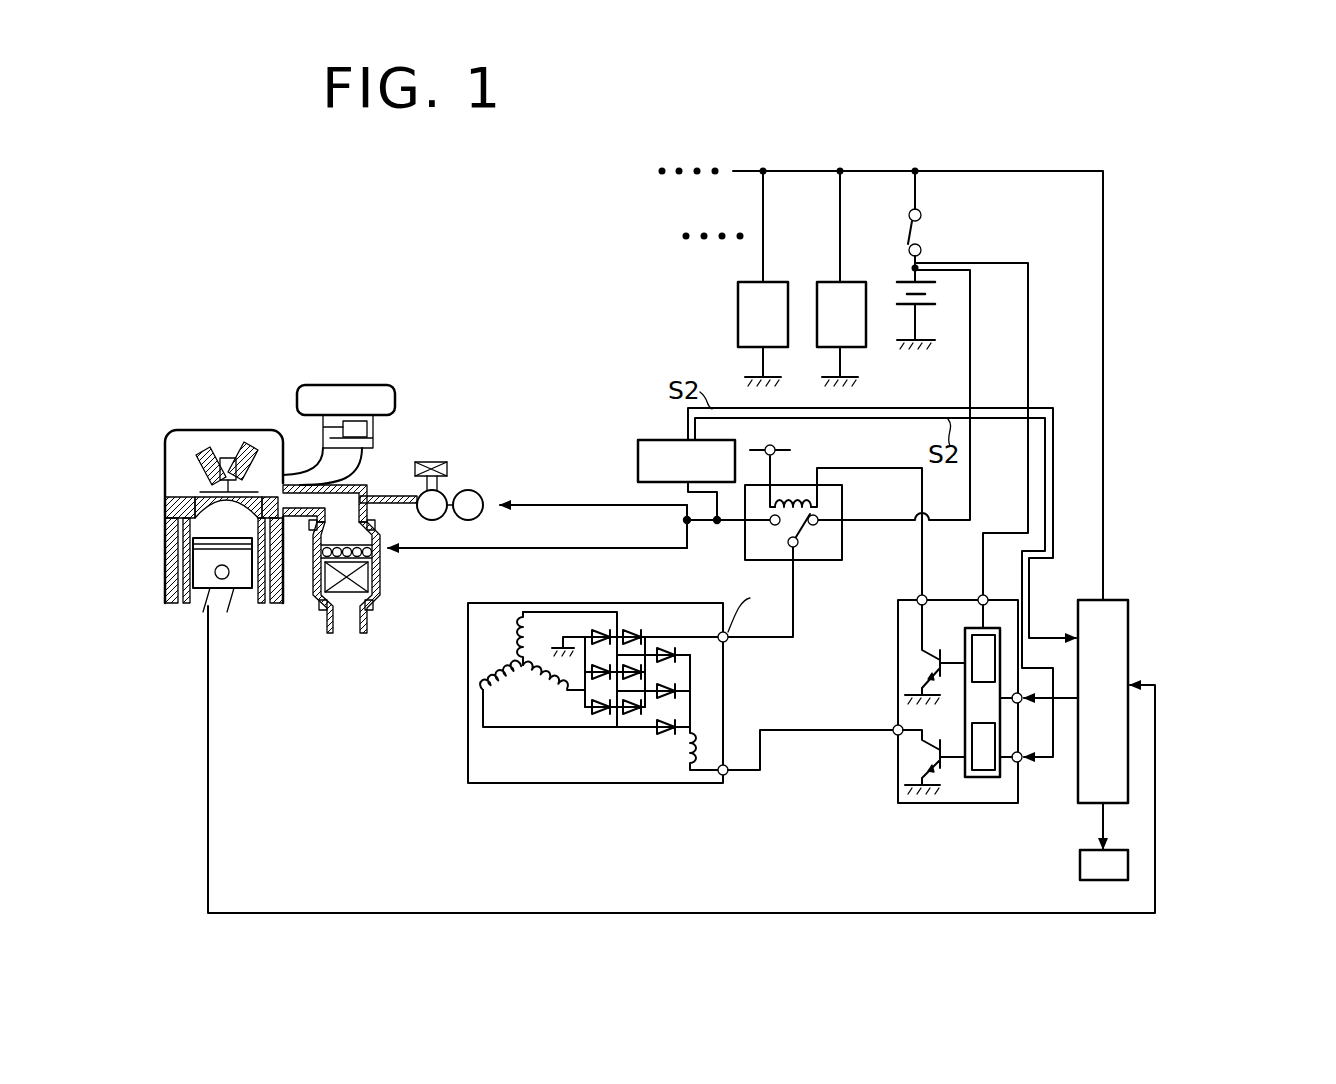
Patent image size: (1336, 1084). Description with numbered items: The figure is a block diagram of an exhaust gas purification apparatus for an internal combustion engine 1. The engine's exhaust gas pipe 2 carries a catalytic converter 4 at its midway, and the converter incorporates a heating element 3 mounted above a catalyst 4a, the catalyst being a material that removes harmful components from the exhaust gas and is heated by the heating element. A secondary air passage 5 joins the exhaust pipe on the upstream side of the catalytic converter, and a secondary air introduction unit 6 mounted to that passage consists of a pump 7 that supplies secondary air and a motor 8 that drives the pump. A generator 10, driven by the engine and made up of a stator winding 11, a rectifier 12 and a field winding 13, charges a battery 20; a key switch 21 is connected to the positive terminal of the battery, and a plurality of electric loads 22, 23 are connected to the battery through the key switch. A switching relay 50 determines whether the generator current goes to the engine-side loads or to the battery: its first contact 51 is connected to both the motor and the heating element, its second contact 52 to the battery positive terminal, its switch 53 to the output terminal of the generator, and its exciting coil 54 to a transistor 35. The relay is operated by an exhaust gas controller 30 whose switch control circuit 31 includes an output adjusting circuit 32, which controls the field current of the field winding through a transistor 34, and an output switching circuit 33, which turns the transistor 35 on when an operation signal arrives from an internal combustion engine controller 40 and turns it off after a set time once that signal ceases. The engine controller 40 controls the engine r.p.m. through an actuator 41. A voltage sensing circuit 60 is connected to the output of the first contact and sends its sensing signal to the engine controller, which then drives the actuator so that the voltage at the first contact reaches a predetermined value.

The internal combustion engine 1 is at (238, 432).
The exhaust gas pipe 2 is at (305, 500).
The heating element 3 is at (385, 557).
The catalytic converter 4 is at (362, 576).
The catalyst 4a is at (368, 572).
The secondary air passage 5 is at (388, 495).
The secondary air introduction unit 6 is at (467, 444).
The pump 7 is at (443, 462).
The motor 8 is at (480, 492).
The generator 10 is at (584, 672).
The stator winding 11 is at (528, 700).
The rectifier 12 is at (628, 630).
The field winding 13 is at (690, 748).
The battery 20 is at (897, 315).
The key switch 21 is at (906, 243).
The electric load 22 is at (825, 150).
The electric load 23 is at (739, 291).
The exhaust gas controller 30 is at (1003, 673).
The switch control circuit 31 is at (1098, 643).
The output adjusting circuit 32 is at (978, 775).
The output switching circuit 33 is at (978, 640).
The transistor 34 is at (919, 746).
The transistor 35 is at (919, 656).
The internal combustion engine controller 40 is at (1118, 600).
The actuator 41 is at (1080, 865).
The switching relay 50 is at (828, 453).
The first contact 51 is at (769, 526).
The second contact 52 is at (818, 527).
The switch 53 is at (800, 548).
The exciting coil 54 is at (808, 483).
The voltage sensing circuit 60 is at (648, 442).